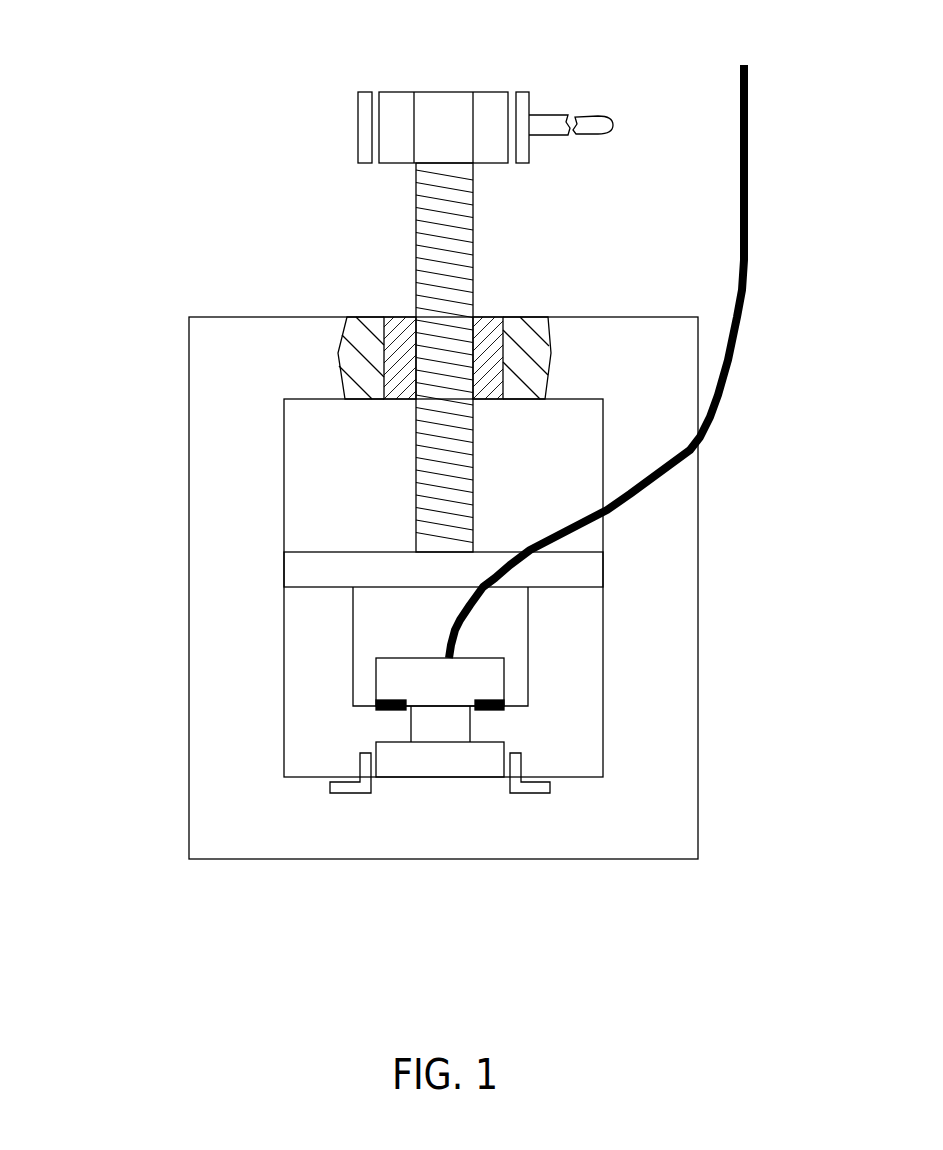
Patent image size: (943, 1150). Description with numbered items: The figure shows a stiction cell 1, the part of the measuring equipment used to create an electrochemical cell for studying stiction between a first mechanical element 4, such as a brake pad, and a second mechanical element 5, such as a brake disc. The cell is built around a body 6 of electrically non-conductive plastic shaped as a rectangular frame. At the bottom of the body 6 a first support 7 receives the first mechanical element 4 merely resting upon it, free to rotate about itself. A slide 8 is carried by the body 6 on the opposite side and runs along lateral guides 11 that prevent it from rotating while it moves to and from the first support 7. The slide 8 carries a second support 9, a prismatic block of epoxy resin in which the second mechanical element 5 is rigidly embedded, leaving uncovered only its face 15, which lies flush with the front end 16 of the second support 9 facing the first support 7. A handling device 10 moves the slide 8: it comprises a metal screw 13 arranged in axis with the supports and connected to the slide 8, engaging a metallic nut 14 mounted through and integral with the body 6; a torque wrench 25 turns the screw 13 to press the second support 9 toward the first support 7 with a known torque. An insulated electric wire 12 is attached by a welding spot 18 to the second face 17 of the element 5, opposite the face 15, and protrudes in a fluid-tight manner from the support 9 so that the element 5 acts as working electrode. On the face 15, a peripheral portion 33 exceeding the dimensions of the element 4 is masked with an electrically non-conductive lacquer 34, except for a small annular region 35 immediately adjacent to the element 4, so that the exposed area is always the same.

The stiction cell 1 is at (150, 218).
The first mechanical element 4 is at (470, 726).
The second mechanical element 5 is at (490, 662).
The body 6 is at (235, 340).
The first support 7 is at (450, 758).
The slide 8 is at (300, 572).
The second support 9 is at (368, 600).
The handling device 10 is at (531, 246).
The lateral guides 11 is at (292, 492).
The insulated electric wire 12 is at (747, 283).
The metal screw 13 is at (410, 252).
The metallic nut 14 is at (518, 320).
The face 15 is at (457, 700).
The front end 16 is at (350, 708).
The second face 17 is at (391, 692).
The welding spot 18 is at (509, 506).
The torque wrench 25 is at (569, 89).
The portion 33 is at (390, 694).
The electrically non-conductive lacquer 34 is at (495, 690).
The annular region 35 is at (403, 713).